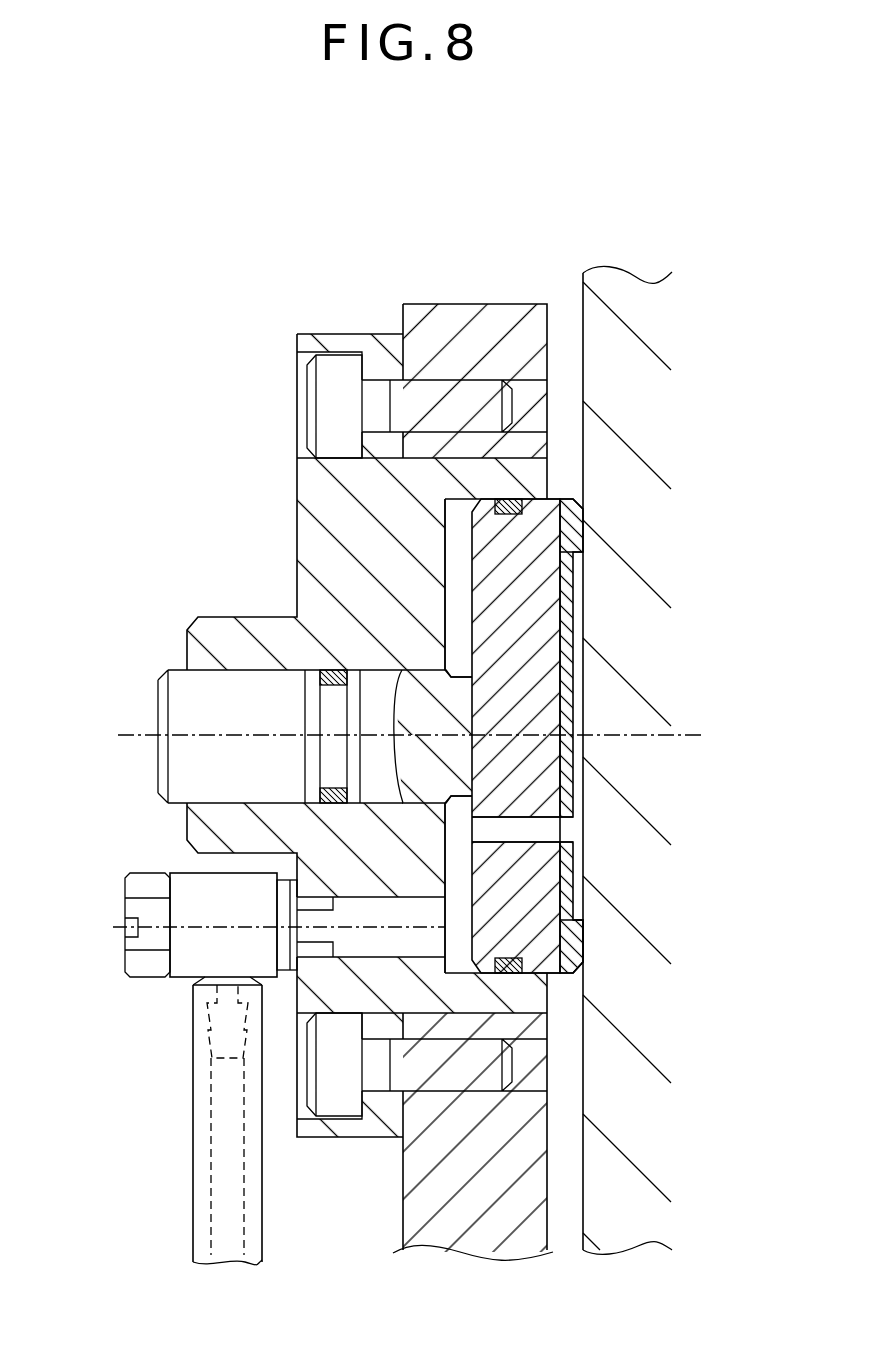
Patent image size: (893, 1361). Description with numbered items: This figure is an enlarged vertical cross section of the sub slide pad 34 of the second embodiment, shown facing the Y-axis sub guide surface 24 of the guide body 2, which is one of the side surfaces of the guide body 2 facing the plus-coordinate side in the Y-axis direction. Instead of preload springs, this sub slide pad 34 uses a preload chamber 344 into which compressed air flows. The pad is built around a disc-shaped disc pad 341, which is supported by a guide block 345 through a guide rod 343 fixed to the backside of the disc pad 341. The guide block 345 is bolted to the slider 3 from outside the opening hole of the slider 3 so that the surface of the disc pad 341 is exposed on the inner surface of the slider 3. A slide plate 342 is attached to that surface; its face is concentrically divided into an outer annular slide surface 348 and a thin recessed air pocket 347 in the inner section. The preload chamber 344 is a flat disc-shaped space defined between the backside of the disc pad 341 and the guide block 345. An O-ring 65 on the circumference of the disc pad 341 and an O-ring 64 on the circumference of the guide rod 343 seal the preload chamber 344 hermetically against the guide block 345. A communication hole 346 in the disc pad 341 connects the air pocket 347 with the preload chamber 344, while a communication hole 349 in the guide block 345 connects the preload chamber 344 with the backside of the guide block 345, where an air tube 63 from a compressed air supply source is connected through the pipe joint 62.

The guide body 2 is at (598, 231).
The Y-axis sub guide surface 24 is at (582, 409).
The slider 3 is at (421, 271).
The sub slide pad 34 is at (143, 295).
The disc pad 341 is at (540, 872).
The slide plate 342 is at (572, 935).
The guide rod 343 is at (233, 685).
The preload chamber 344 is at (456, 572).
The guide block 345 is at (307, 477).
The communication hole 346 is at (540, 826).
The air pocket 347 is at (577, 610).
The annular slide surface 348 is at (585, 528).
The communication hole 349 is at (378, 943).
The pipe joint 62 is at (180, 978).
The air tube 63 is at (195, 1120).
The O-ring 64 is at (332, 668).
The O-ring 65 is at (490, 504).